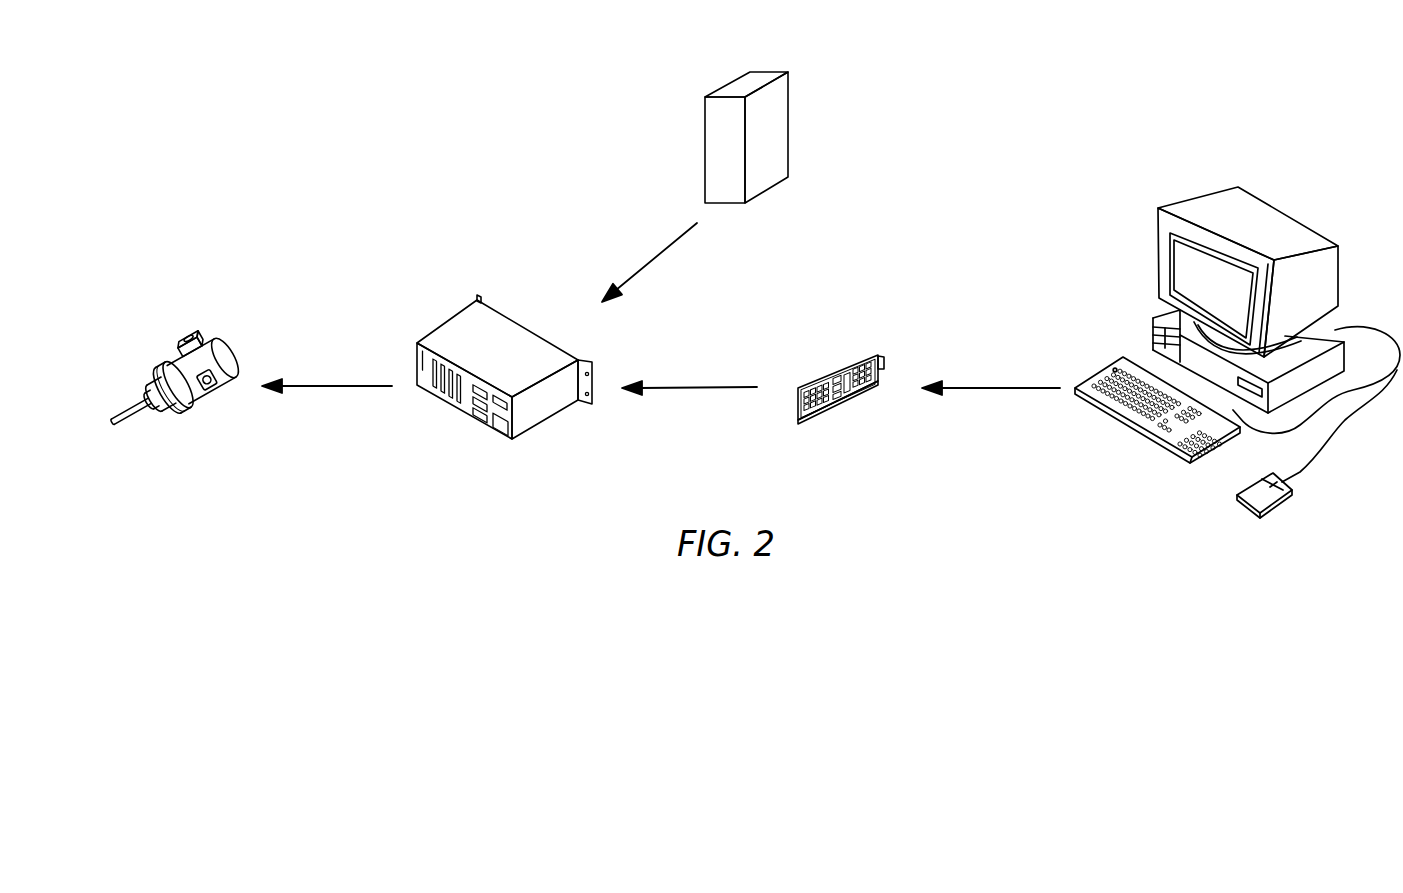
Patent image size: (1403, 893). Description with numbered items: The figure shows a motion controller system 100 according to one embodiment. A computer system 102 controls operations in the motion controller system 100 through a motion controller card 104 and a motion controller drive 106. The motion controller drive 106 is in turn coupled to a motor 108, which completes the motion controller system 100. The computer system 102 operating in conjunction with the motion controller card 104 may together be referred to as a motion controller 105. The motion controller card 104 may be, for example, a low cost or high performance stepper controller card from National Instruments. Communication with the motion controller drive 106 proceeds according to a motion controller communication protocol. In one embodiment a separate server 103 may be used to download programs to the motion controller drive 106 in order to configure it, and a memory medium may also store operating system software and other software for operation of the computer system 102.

The motion controller system 100 is at (470, 160).
The computer system 102 is at (1173, 202).
The server 103 is at (760, 70).
The motion controller card 104 is at (832, 378).
The motion controller 105 is at (970, 262).
The motion controller drive 106 is at (445, 325).
The motor 108 is at (204, 348).